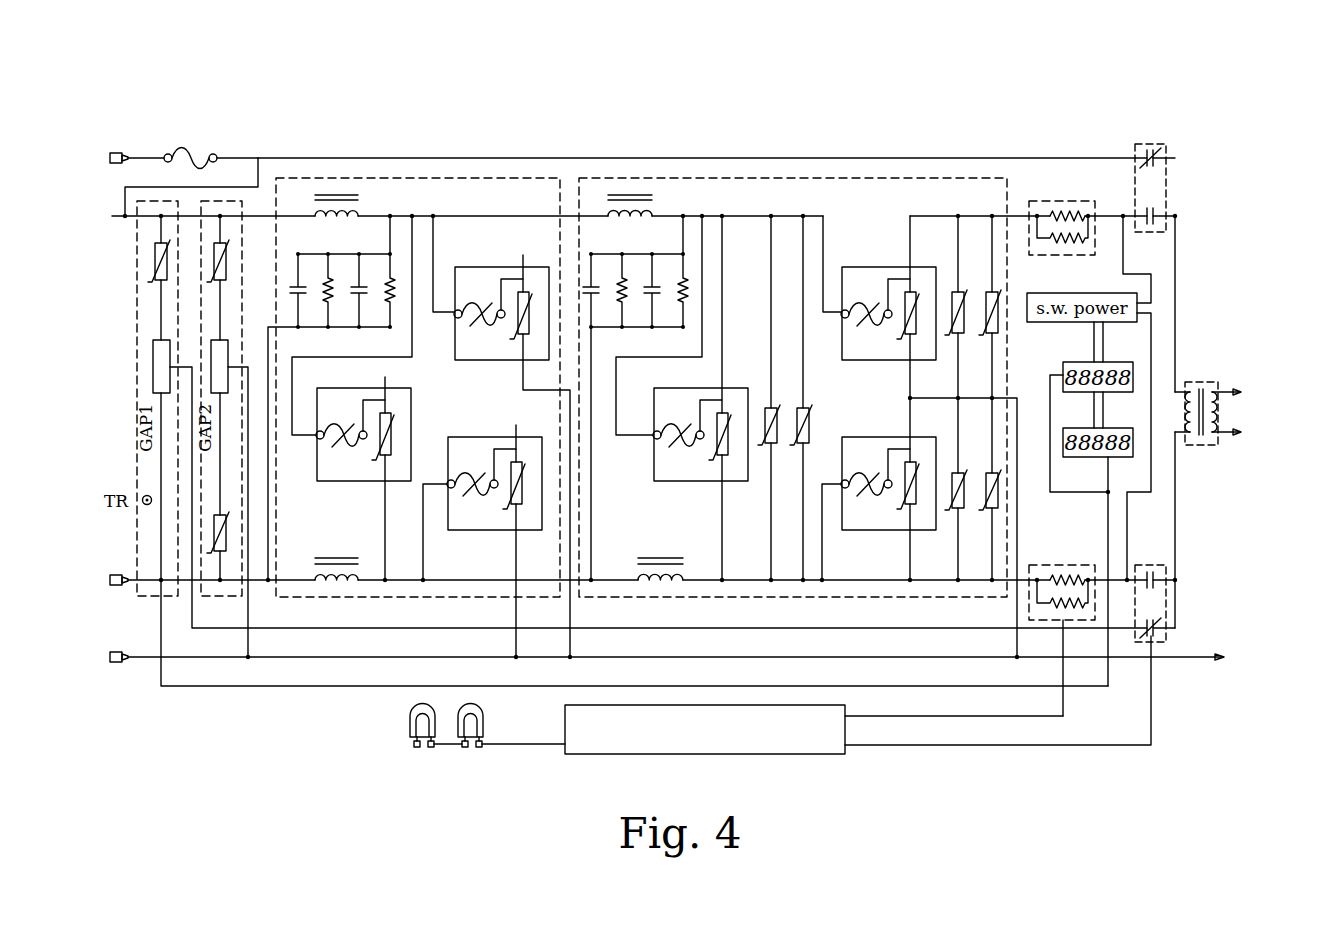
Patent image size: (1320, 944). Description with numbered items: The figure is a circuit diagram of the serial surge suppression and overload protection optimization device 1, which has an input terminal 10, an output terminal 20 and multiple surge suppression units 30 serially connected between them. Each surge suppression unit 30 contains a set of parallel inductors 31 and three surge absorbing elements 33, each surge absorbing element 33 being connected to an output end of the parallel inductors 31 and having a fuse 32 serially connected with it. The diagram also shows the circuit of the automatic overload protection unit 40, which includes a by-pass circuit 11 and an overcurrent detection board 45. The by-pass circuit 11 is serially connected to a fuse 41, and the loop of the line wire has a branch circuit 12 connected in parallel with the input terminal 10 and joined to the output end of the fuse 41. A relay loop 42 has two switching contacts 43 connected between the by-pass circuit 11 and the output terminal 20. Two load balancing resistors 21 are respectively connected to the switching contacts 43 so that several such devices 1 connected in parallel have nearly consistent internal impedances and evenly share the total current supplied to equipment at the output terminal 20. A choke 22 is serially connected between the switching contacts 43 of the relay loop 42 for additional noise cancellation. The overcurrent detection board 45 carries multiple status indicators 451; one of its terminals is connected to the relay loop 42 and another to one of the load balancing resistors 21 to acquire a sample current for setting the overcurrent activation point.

The serial surge suppression and overload protection optimization device 1 is at (82, 82).
The input terminal 10 is at (97, 160).
The by-pass circuit 11 is at (303, 158).
The branch circuit 12 is at (240, 187).
The output terminal 20 is at (1272, 374).
The load balancing resistors 21 is at (1065, 200).
The choke 22 is at (1200, 382).
The surge suppression unit 30 is at (413, 178).
The parallel inductors 31 is at (350, 180).
The fuse 32 is at (485, 292).
The surge absorbing element 33 is at (535, 282).
The automatic overload protection unit 40 is at (226, 108).
The fuse 41 is at (182, 146).
The relay loop 42 is at (1168, 185).
The switching contacts 43 is at (1180, 216).
The overcurrent detection board 45 is at (812, 748).
The status indicators 451 is at (410, 720).